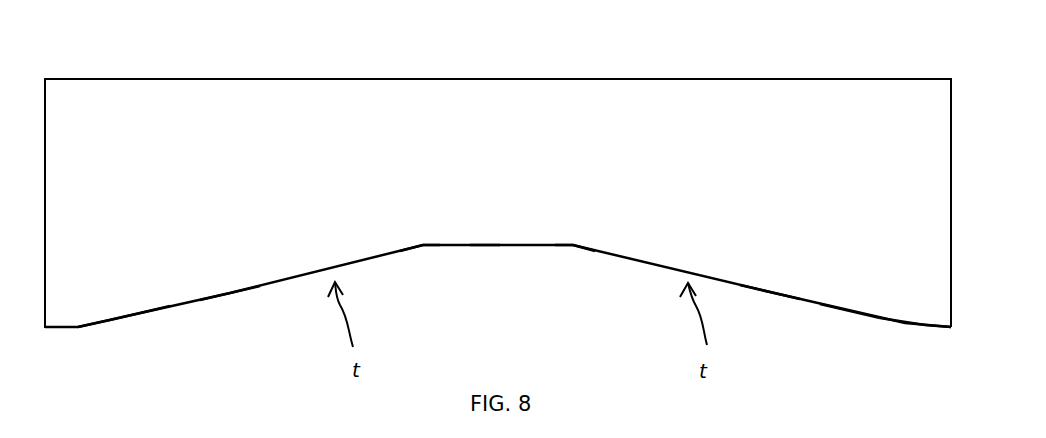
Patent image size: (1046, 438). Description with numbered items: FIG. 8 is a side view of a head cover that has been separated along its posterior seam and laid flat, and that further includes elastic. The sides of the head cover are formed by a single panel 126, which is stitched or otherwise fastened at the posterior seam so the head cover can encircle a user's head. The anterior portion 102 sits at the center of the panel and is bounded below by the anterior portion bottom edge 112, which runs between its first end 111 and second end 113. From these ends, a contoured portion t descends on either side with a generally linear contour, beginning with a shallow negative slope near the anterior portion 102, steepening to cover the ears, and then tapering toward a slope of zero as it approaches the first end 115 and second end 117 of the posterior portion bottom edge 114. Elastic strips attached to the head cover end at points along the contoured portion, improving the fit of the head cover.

The single panel 126 is at (665, 140).
The anterior portion 102 is at (497, 245).
The first end of the anterior portion bottom edge 111 is at (423, 245).
The anterior portion bottom edge 112 is at (485, 245).
The second end of the anterior portion bottom edge 113 is at (573, 245).
The first end of the posterior portion bottom edge 115 is at (80, 327).
The second end of the posterior portion bottom edge 117 is at (903, 325).
The posterior portion bottom edge 114 is at (947, 327).